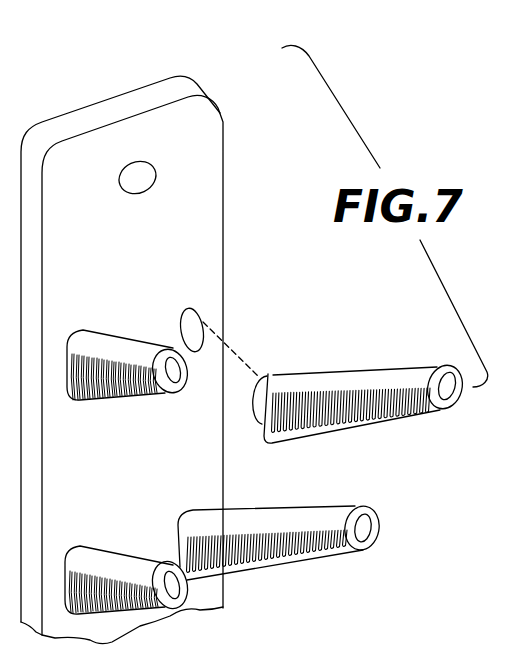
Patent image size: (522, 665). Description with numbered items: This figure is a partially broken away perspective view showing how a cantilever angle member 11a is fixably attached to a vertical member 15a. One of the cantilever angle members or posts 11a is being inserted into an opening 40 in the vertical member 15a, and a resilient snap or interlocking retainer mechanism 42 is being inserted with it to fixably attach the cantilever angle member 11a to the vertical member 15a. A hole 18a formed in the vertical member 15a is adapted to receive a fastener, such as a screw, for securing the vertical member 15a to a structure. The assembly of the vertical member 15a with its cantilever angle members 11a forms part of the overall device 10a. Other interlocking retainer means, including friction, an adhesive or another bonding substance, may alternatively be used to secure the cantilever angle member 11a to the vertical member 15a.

The peg board / storage panel 10a is at (262, 182).
The cantilever angle member 11a is at (128, 350).
The vertical member 15a is at (217, 253).
The hole 18a is at (137, 174).
The peg mounting hole 40 is at (197, 316).
The resilient snap or interlocking retainer mechanism 42 is at (266, 377).